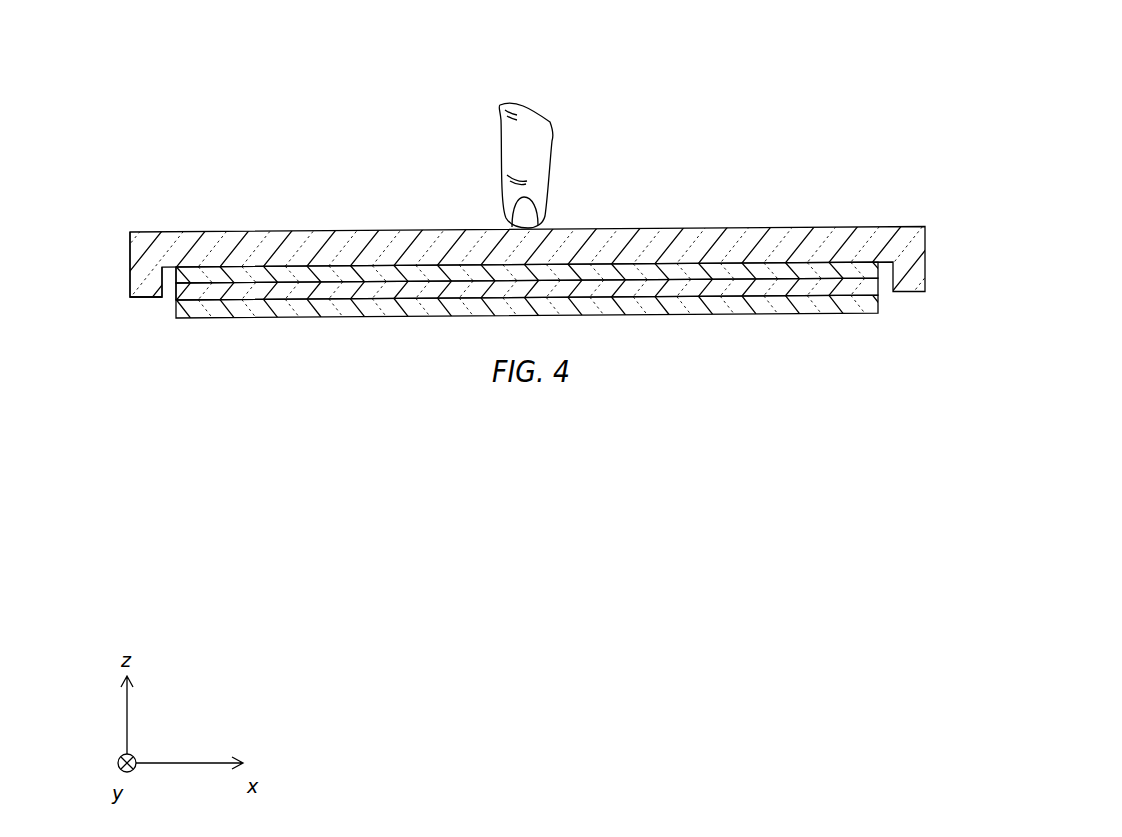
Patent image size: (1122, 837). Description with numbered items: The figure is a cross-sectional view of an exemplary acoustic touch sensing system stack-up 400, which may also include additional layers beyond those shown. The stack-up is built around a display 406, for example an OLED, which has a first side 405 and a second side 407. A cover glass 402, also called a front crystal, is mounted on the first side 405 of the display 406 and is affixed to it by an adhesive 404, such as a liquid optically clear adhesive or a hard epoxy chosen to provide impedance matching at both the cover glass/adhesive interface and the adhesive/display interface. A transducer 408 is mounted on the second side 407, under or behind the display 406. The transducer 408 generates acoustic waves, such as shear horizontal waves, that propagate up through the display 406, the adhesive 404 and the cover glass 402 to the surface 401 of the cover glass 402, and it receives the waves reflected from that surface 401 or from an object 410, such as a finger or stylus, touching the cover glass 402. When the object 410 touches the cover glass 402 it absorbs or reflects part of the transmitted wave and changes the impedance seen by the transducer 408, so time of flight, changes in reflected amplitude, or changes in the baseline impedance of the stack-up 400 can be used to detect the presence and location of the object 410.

The acoustic touch sensing system stack-up 400 is at (851, 127).
The surface of cover glass 401 is at (240, 232).
The cover glass 402 is at (137, 243).
The adhesive 404 is at (140, 299).
The first side of display 405 is at (323, 283).
The display 406 is at (174, 277).
The second side of display 407 is at (294, 294).
The transducer 408 is at (205, 312).
The object 410 is at (553, 141).